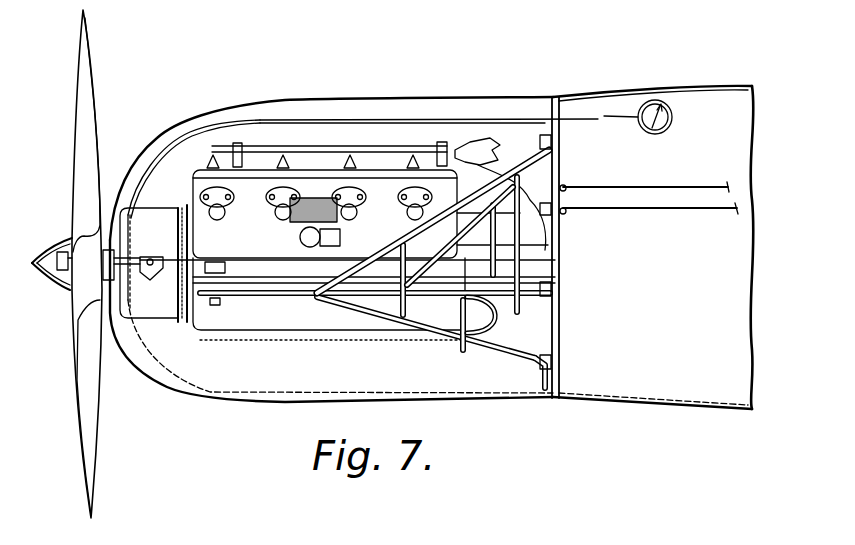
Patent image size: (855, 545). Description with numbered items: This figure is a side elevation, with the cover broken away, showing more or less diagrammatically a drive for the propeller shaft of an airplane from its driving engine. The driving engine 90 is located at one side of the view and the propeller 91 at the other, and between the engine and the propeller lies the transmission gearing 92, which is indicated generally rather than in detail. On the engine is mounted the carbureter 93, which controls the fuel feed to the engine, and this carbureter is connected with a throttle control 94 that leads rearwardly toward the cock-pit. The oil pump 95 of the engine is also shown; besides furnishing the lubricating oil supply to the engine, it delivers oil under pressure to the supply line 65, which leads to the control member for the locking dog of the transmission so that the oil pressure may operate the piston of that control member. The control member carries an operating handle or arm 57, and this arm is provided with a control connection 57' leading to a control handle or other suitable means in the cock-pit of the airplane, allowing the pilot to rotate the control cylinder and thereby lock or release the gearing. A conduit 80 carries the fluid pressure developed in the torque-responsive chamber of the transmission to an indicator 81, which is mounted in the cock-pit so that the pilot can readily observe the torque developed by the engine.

The propeller 91 is at (86, 76).
The transmission gearing 92 is at (155, 213).
The driving engine 90 is at (248, 197).
The carbureter 93 is at (309, 196).
The conduit 80 is at (510, 120).
The indicator 81 is at (672, 118).
The throttle control 94 is at (588, 185).
The control connection 57' is at (649, 229).
The oil pump 95 is at (497, 250).
The supply line 65 is at (483, 323).
The operating handle 57 is at (140, 249).